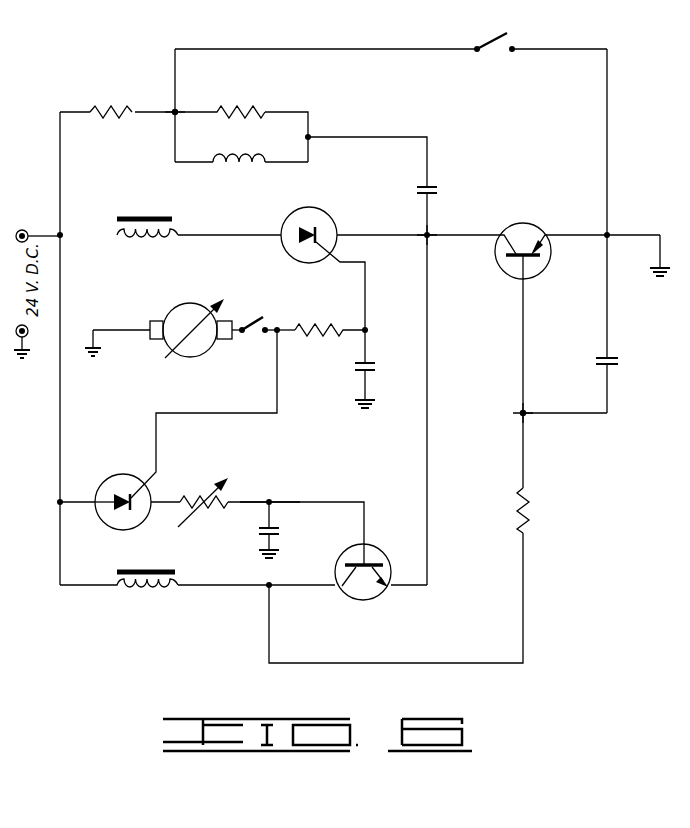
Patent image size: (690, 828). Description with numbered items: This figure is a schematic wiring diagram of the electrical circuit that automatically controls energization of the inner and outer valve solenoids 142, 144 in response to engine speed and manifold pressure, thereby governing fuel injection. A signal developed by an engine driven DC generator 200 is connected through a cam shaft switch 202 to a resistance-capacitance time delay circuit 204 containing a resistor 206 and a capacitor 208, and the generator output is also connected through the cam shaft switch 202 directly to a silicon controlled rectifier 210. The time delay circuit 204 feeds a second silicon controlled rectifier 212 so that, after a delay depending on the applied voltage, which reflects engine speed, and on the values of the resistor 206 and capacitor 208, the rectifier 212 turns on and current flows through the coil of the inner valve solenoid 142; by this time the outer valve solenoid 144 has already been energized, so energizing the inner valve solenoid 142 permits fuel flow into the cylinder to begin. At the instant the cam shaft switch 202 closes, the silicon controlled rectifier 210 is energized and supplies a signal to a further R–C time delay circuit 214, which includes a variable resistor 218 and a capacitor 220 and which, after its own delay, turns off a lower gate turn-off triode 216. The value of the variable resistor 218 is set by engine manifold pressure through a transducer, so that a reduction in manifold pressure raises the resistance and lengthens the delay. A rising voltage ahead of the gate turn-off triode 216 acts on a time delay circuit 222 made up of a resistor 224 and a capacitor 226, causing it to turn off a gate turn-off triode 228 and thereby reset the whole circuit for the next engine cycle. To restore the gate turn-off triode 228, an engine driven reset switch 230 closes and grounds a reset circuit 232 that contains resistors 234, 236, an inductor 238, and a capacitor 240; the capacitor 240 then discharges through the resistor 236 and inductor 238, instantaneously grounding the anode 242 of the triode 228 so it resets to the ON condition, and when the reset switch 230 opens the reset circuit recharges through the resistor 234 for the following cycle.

The inner valve solenoid 142 is at (145, 255).
The outer valve solenoid 144 is at (138, 602).
The engine driven DC generator 200 is at (188, 352).
The cam shaft switch 202 is at (254, 318).
The resistance-capacitance time delay circuit 204 is at (345, 349).
The resistor 206 is at (312, 322).
The capacitor 208 is at (380, 367).
The silicon controlled rectifier 210 is at (104, 523).
The silicon controlled rectifier 212 is at (290, 213).
The R–C time delay circuit 214 is at (245, 514).
The lower gate turn-off triode 216 is at (358, 590).
The variable resistor 218 is at (193, 497).
The capacitor 220 is at (276, 518).
The time delay circuit 222 is at (535, 419).
The resistor 224 is at (516, 506).
The capacitor 226 is at (620, 363).
The gate turn-off triode 228 is at (523, 227).
The engine driven reset switch 230 is at (497, 50).
The reset circuit 232 is at (170, 119).
The resistor 234 is at (106, 107).
The resistor 236 is at (247, 106).
The inductor 238 is at (225, 167).
The capacitor 240 is at (432, 186).
The anode 242 is at (437, 232).